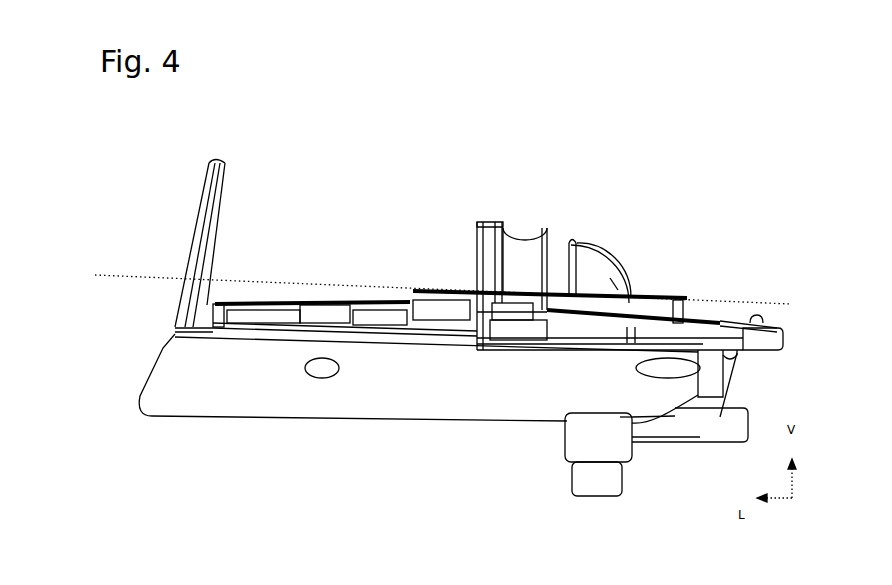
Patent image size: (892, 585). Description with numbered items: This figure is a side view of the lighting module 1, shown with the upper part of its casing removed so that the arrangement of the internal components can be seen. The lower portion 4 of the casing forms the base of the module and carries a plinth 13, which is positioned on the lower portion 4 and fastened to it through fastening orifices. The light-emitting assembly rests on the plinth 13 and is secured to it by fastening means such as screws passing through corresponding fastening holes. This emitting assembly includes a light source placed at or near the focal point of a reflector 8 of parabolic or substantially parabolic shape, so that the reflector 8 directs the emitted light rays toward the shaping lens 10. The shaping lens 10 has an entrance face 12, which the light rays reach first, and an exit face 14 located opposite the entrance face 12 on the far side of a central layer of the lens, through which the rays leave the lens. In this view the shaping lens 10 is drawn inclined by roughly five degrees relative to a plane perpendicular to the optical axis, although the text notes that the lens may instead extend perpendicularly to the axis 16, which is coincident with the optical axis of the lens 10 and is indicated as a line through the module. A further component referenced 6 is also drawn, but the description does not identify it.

The lighting module 1 is at (431, 477).
The lower portion 4 is at (265, 395).
The drive unit 6 is at (512, 228).
The reflector 8 is at (560, 236).
The shaping lens 10 is at (203, 200).
The entrance face 12 is at (225, 207).
The plinth 13 is at (700, 398).
The exit face 14 is at (180, 238).
The axis 16 is at (348, 283).